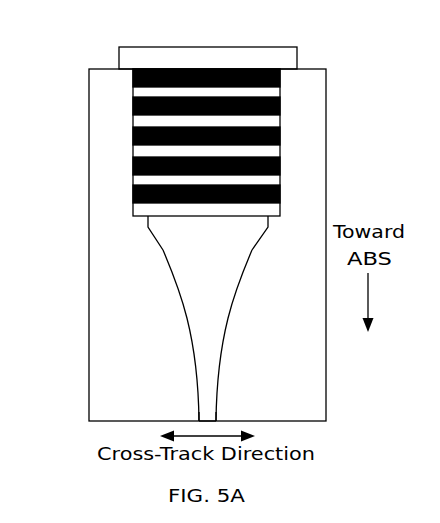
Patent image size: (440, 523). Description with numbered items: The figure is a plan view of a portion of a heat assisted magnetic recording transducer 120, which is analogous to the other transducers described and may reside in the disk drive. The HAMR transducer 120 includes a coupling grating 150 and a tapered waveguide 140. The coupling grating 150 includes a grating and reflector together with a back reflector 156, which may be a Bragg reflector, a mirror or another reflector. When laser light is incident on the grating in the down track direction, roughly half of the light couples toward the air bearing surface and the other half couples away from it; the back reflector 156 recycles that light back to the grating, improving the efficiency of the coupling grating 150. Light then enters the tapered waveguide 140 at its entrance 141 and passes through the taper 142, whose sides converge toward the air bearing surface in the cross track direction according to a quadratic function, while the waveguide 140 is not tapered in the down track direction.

The HAMR transducer 120 is at (230, 18).
The back reflector 156 is at (119, 53).
The coupling grating 150 is at (105, 157).
The entrance 141 is at (310, 221).
The taper 142 is at (172, 318).
The tapered waveguide 140 is at (216, 407).